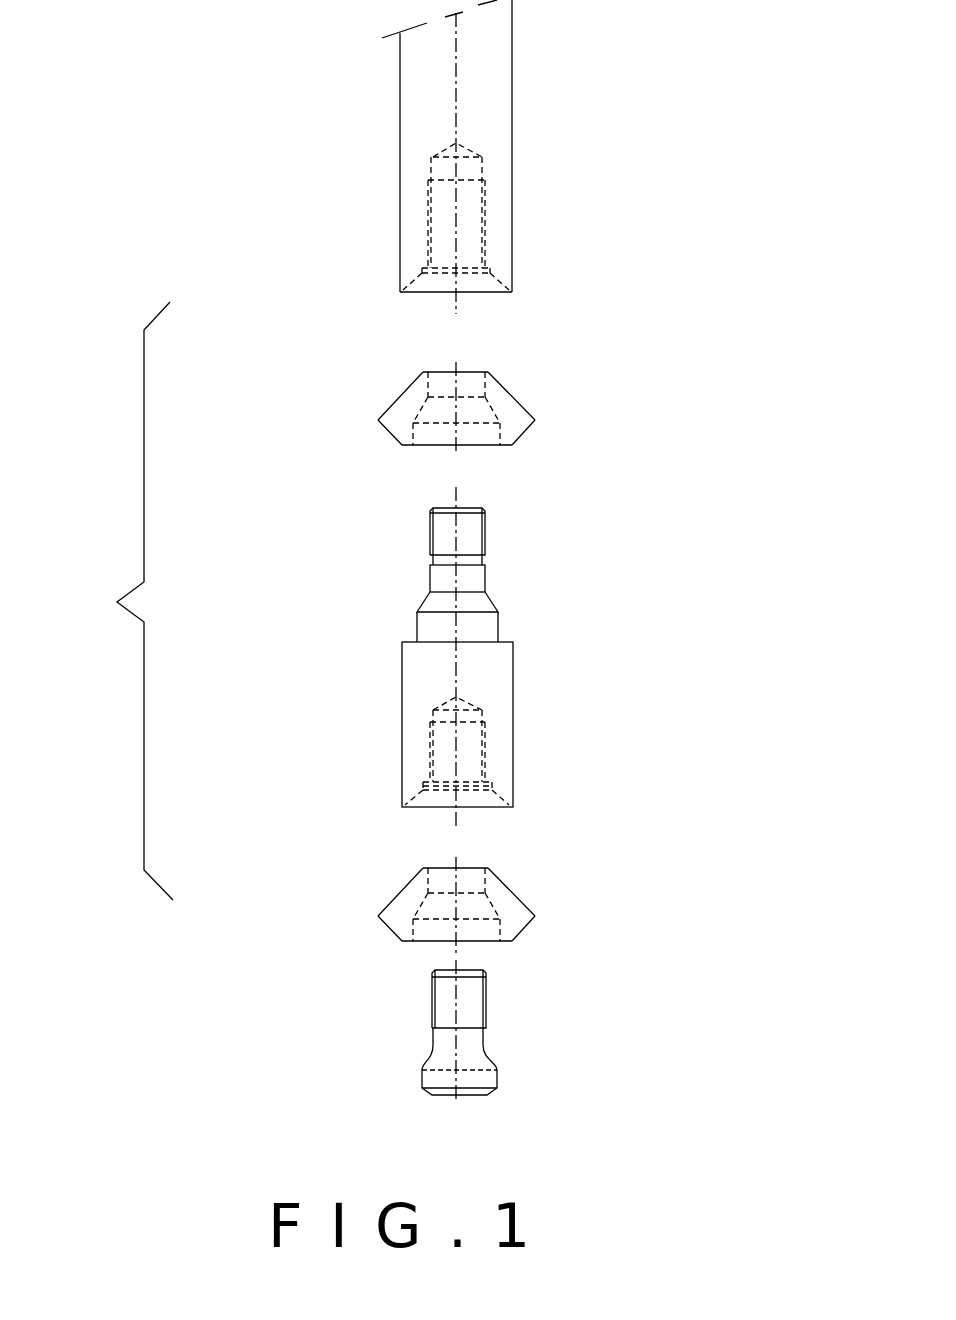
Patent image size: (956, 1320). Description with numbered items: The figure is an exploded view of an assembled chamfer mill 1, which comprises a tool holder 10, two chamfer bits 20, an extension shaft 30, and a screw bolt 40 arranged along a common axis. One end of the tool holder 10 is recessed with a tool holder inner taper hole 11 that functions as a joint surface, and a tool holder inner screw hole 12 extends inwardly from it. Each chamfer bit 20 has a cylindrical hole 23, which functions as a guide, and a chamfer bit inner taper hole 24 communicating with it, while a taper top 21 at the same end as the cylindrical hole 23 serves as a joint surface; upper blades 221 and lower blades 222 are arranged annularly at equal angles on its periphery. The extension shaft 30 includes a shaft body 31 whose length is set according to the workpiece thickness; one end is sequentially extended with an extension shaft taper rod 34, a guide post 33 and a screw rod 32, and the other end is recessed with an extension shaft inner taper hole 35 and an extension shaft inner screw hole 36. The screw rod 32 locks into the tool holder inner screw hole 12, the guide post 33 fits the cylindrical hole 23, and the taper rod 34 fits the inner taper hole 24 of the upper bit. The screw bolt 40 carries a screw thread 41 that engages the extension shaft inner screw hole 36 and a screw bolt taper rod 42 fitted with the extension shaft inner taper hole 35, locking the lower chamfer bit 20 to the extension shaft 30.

The assembled chamfer mill 1 is at (125, 601).
The tool holder 10 is at (410, 130).
The tool holder inner taper hole 11 is at (495, 283).
The tool holder inner screw hole 12 is at (485, 212).
The chamfer bit 20 is at (362, 405).
The taper top 21 is at (402, 392).
The cylindrical hole 23 is at (448, 373).
The chamfer bit inner taper hole 24 is at (490, 413).
The upper blades 221 is at (528, 408).
The lower blades 222 is at (527, 435).
The extension shaft 30 is at (365, 677).
The shaft body 31 is at (507, 718).
The screw rod 32 is at (430, 533).
The guide post 33 is at (430, 580).
The extension shaft taper rod 34 is at (493, 600).
The extension shaft inner taper hole 35 is at (498, 800).
The extension shaft inner screw hole 36 is at (432, 757).
The screw bolt 40 is at (515, 1035).
The screw thread 41 is at (432, 1003).
The screw bolt taper rod 42 is at (495, 1062).